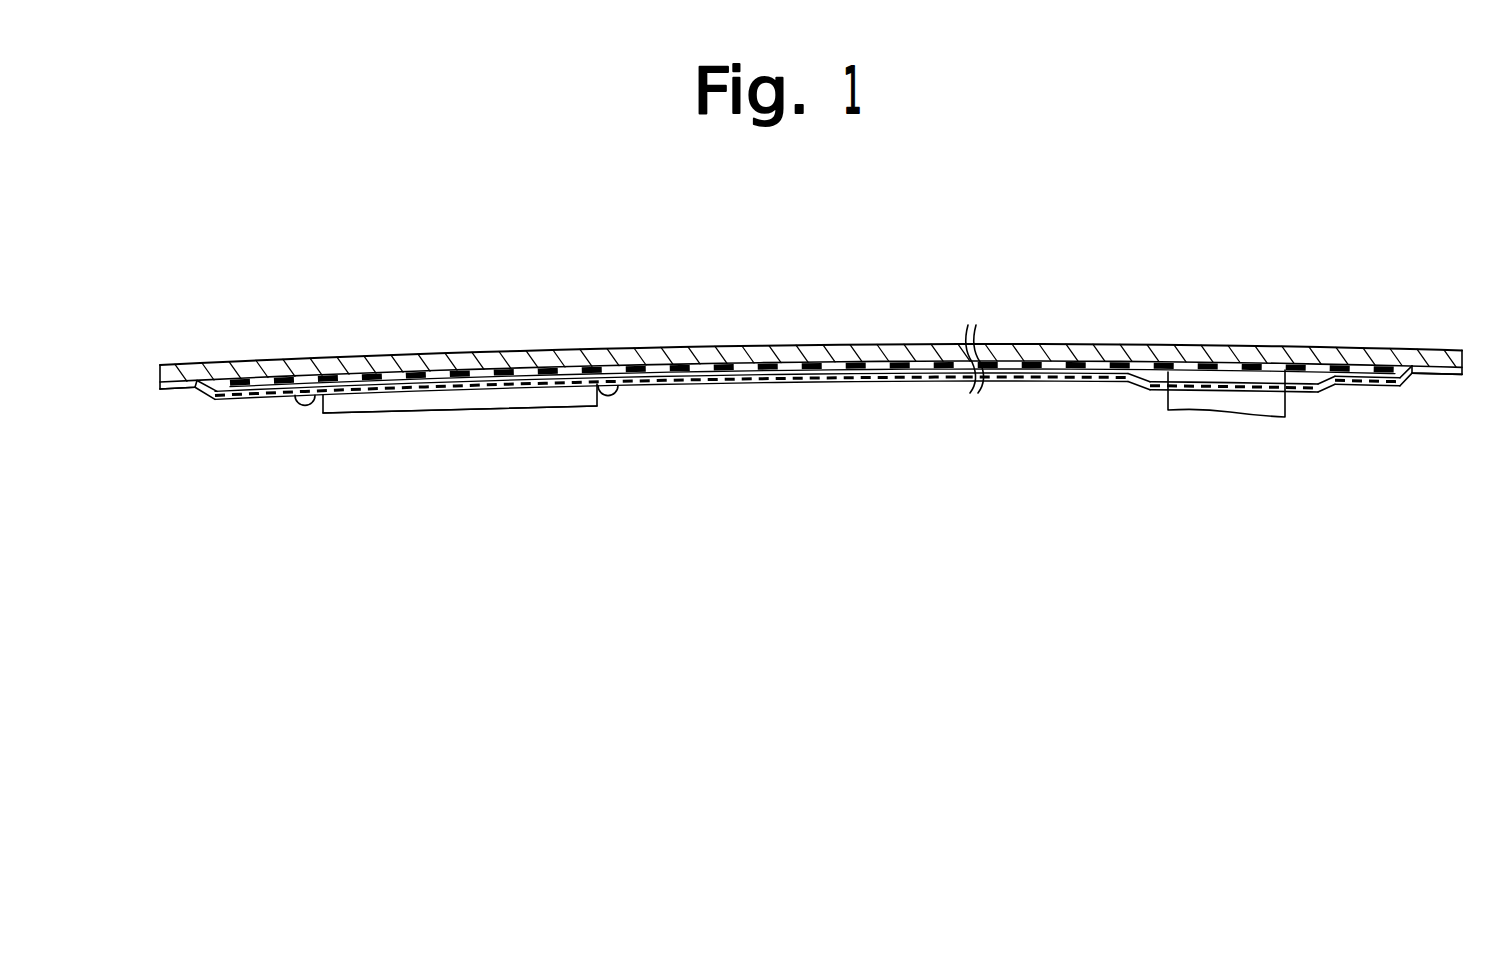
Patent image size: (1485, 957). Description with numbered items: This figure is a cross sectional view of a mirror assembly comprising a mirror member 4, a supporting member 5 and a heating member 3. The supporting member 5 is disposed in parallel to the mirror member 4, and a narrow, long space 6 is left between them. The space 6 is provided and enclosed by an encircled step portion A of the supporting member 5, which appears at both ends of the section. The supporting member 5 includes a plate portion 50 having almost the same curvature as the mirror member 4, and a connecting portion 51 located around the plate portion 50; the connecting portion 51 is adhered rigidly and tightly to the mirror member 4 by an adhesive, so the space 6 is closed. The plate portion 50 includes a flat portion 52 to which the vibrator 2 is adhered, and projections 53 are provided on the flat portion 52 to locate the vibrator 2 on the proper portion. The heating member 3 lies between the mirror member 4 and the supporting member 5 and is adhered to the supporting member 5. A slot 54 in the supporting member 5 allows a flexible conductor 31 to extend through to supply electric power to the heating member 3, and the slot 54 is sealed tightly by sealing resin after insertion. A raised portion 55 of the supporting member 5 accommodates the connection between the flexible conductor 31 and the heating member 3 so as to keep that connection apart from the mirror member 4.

The vibrator 2 is at (468, 409).
The heating member 3 is at (1040, 372).
The mirror member 4 is at (1087, 345).
The supporting member 5 is at (925, 381).
The space 6 is at (653, 372).
The flexible conductor 31 is at (1185, 402).
The plate portion 50 is at (772, 386).
The connecting portion 51 is at (180, 391).
The flat portion 52 is at (360, 396).
The projections 53 is at (306, 406).
The slot 54 is at (1310, 393).
The raised portion 55 is at (1142, 383).
The step portion A is at (183, 365).